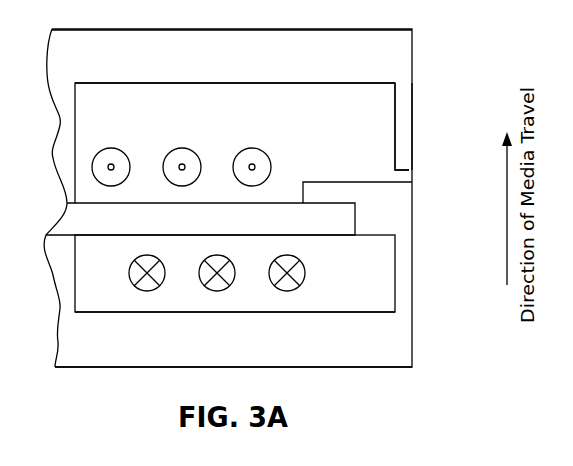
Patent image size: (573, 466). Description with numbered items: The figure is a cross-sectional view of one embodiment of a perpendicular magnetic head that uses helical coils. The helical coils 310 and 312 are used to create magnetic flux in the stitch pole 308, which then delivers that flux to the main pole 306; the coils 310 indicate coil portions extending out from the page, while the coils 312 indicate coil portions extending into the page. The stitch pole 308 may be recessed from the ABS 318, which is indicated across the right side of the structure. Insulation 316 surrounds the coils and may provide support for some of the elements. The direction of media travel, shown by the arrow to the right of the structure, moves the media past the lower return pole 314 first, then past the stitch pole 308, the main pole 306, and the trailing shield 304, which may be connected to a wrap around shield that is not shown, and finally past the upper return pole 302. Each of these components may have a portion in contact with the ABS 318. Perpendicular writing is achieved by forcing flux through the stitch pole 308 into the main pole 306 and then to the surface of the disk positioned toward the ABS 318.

The upper return pole 302 is at (317, 65).
The trailing shield 304 is at (413, 130).
The main pole 306 is at (413, 190).
The stitch pole 308 is at (262, 229).
The helical coils 310 is at (109, 148).
The helical coils 312 is at (130, 277).
The lower return pole 314 is at (262, 349).
The insulation 316 is at (357, 139).
The ABS 318 is at (419, 51).